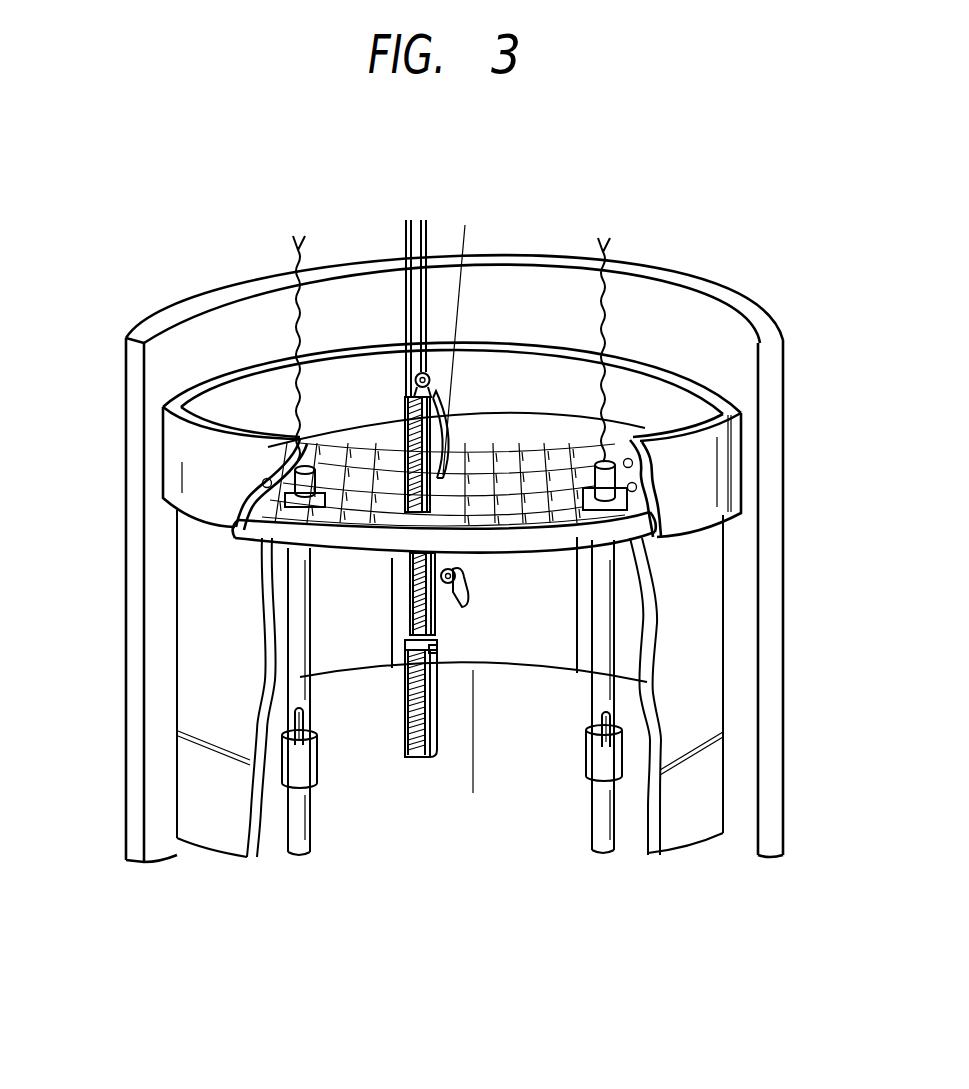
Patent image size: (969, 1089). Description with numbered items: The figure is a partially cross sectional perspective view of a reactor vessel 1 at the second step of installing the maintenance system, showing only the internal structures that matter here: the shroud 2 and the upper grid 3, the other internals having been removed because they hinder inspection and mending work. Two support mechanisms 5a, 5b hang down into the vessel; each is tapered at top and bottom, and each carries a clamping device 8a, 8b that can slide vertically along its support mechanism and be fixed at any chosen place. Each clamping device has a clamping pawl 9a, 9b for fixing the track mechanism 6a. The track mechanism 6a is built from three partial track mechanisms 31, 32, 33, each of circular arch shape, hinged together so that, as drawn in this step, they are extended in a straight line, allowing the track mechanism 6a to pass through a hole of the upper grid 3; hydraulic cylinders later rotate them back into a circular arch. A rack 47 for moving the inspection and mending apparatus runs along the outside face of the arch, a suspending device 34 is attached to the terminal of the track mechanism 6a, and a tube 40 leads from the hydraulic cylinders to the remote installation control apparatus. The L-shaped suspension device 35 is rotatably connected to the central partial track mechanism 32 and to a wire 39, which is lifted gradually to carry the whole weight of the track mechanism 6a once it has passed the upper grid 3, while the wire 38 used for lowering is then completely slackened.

The outer cylindrical housing 1 is at (133, 502).
The shroud 2 is at (183, 452).
The upper grid 3 is at (263, 528).
The support mechanism 5a is at (604, 843).
The support mechanism 5b is at (300, 843).
The track mechanism 6a is at (416, 754).
The clamping device 8a is at (615, 760).
The clamping device 8b is at (290, 767).
The clamping pawl 9a is at (612, 723).
The clamping pawl 9b is at (297, 722).
The partial track mechanism 31 is at (405, 717).
The partial track mechanism 32 is at (410, 588).
The partial track mechanism 33 is at (402, 440).
The suspending device 34 is at (432, 372).
The suspension device 35 is at (460, 605).
The wire 38 is at (428, 243).
The wire 39 is at (466, 240).
The tube 40 is at (405, 243).
The rack 47 is at (408, 678).